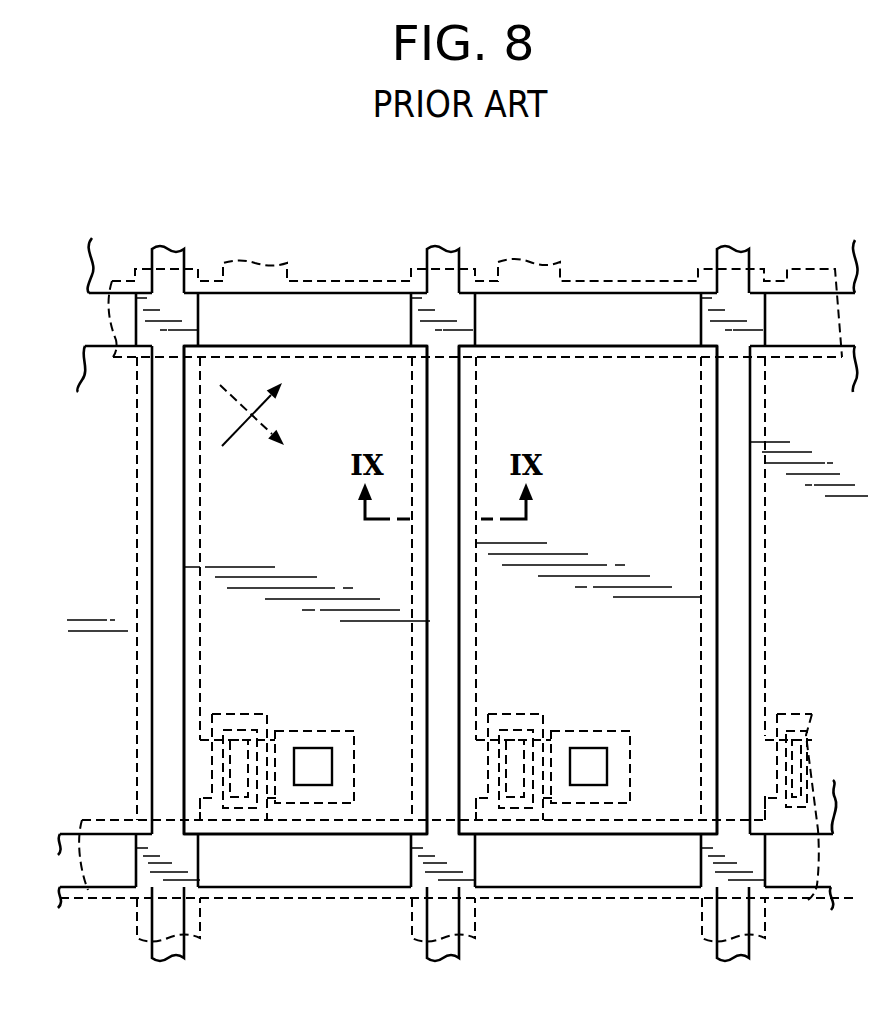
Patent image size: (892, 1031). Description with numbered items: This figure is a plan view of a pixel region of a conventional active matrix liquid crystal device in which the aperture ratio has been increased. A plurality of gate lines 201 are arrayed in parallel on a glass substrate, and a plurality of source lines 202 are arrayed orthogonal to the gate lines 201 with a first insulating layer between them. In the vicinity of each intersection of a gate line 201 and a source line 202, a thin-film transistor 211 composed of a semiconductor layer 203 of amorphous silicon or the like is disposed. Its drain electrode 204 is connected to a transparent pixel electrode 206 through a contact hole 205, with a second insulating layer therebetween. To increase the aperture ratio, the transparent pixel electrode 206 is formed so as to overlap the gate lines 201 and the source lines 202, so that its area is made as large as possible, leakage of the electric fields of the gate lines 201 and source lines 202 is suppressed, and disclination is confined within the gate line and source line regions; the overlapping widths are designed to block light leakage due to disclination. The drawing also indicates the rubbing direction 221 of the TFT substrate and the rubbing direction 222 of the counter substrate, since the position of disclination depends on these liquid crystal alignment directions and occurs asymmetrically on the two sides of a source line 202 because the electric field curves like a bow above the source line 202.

The gate line 201 is at (375, 317).
The source line 202 is at (196, 312).
The semiconductor layer 203 is at (231, 807).
The drain electrode 204 is at (347, 788).
The contact hole 205 is at (294, 773).
The transparent pixel electrode 206 is at (322, 383).
The thin-film transistor 211 is at (241, 735).
The rubbing direction of TFT substrate 221 is at (258, 418).
The rubbing direction of counter substrate 222 is at (226, 444).